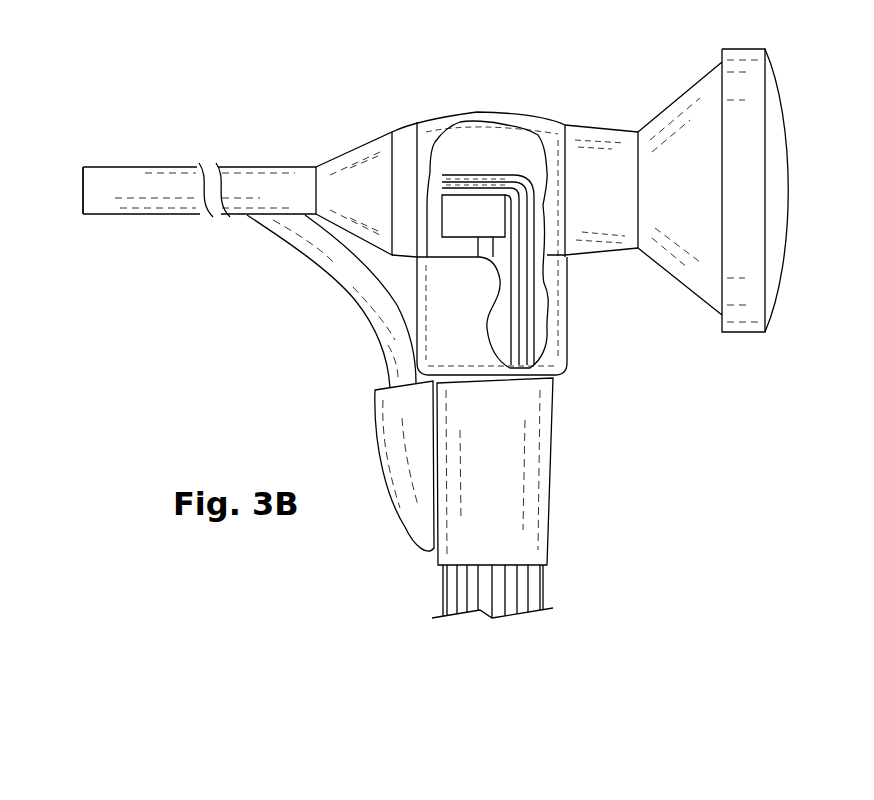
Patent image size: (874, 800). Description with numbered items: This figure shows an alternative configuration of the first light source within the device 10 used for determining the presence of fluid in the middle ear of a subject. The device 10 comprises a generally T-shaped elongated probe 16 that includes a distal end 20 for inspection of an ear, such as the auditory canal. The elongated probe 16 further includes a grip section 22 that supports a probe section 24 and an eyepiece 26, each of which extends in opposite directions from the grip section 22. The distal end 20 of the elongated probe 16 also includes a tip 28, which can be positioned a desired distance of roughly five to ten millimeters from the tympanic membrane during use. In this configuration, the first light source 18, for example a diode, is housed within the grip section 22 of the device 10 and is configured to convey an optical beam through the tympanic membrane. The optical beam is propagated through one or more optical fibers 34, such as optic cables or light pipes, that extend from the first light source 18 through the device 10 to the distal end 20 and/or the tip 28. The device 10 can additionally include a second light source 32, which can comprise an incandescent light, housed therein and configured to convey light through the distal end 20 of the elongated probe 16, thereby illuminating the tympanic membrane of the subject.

The device 10 is at (638, 57).
The elongated probe 16 is at (287, 130).
The first light source 18 is at (487, 167).
The distal end 20 is at (95, 157).
The grip section 22 is at (577, 473).
The probe section 24 is at (173, 240).
The eyepiece 26 is at (798, 165).
The tip 28 is at (82, 193).
The second light source 32 is at (467, 223).
The optical fibers 34 is at (525, 283).